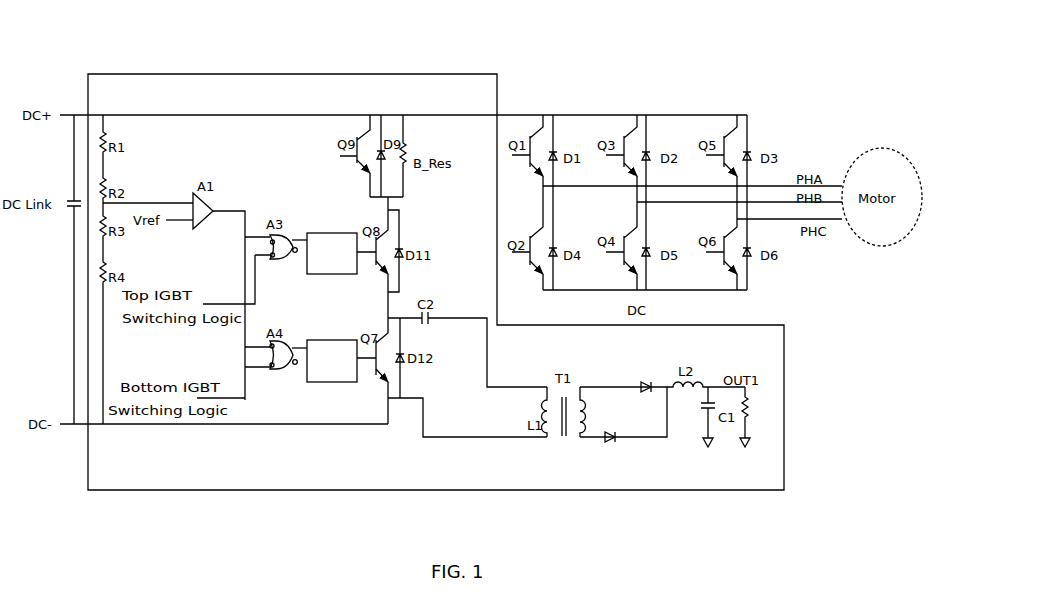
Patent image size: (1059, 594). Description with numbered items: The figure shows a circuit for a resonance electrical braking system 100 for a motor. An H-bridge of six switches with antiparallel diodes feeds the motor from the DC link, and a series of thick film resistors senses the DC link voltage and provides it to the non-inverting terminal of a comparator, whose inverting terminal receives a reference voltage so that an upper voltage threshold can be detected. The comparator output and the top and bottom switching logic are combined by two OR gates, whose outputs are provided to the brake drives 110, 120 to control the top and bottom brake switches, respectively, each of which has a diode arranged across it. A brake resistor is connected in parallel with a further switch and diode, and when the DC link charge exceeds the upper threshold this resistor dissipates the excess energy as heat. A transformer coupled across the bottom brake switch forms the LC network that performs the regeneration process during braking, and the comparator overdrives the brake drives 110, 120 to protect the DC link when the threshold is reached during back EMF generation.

The resonance electrical braking system 100 is at (478, 48).
The brake drive 110 is at (328, 234).
The brake drive 120 is at (333, 341).